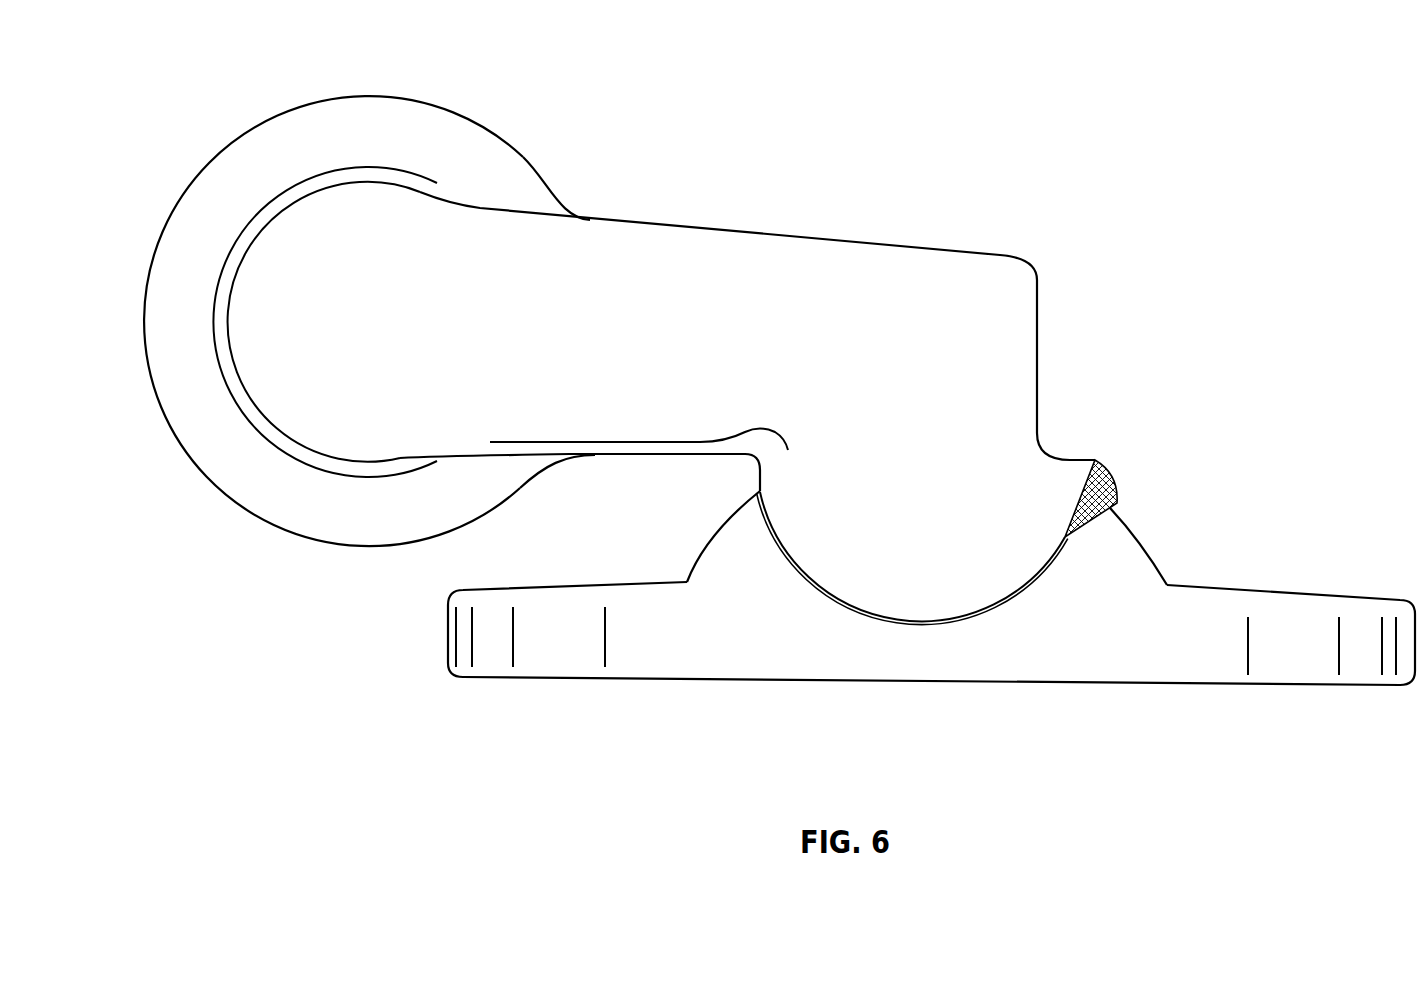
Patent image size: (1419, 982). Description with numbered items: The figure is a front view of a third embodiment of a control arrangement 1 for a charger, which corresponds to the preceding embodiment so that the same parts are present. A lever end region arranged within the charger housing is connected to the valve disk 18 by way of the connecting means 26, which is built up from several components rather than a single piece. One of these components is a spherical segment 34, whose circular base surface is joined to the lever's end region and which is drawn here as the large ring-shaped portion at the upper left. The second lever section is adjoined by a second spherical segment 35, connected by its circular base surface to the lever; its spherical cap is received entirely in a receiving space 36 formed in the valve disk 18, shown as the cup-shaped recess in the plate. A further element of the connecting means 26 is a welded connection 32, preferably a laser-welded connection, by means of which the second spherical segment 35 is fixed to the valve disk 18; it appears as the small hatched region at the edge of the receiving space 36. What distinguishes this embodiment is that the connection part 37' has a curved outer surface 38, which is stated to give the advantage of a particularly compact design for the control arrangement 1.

The fastening device 1 is at (779, 405).
The spherical segment 34 is at (528, 153).
The connecting means 26 is at (805, 230).
The curved outer surface 38 is at (714, 535).
The welded connection 32 is at (1113, 486).
The connection part 37' is at (1023, 537).
The valve disk 18 is at (1217, 580).
The receiving space 36 is at (920, 607).
The second spherical segment 35 is at (958, 585).